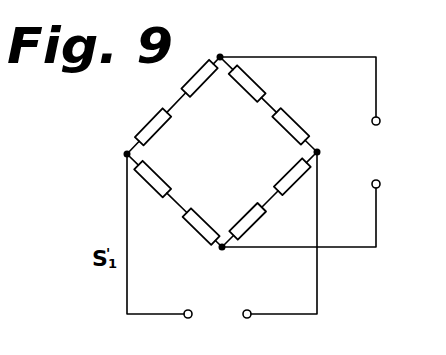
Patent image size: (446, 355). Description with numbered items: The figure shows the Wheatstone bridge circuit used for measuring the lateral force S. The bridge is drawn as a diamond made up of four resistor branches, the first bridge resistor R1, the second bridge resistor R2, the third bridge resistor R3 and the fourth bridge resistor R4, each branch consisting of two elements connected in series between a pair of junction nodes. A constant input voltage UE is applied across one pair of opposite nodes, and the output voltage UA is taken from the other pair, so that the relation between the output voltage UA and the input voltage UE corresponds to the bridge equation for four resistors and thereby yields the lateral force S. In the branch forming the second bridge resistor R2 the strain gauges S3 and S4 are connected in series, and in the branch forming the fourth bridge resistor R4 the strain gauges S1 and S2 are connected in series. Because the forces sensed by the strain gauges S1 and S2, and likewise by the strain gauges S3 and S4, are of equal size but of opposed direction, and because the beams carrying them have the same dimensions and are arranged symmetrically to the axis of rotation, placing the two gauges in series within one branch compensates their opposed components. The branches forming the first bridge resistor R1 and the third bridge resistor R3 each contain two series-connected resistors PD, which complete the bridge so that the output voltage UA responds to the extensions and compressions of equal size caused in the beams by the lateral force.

The first bridge resistor R1 is at (174, 200).
The second bridge resistor R2 is at (161, 105).
The third bridge resistor R3 is at (268, 104).
The fourth bridge resistor R4 is at (269, 199).
The strain gauge on first beam S1 is at (247, 212).
The strain gauge on second beam S2 is at (281, 175).
The strain gauge on third beam S3 is at (158, 131).
The strain gauge on fourth beam S4 is at (200, 90).
The resistor PD is at (221, 155).
The input voltage UE is at (307, 152).
The output voltage UA is at (222, 246).